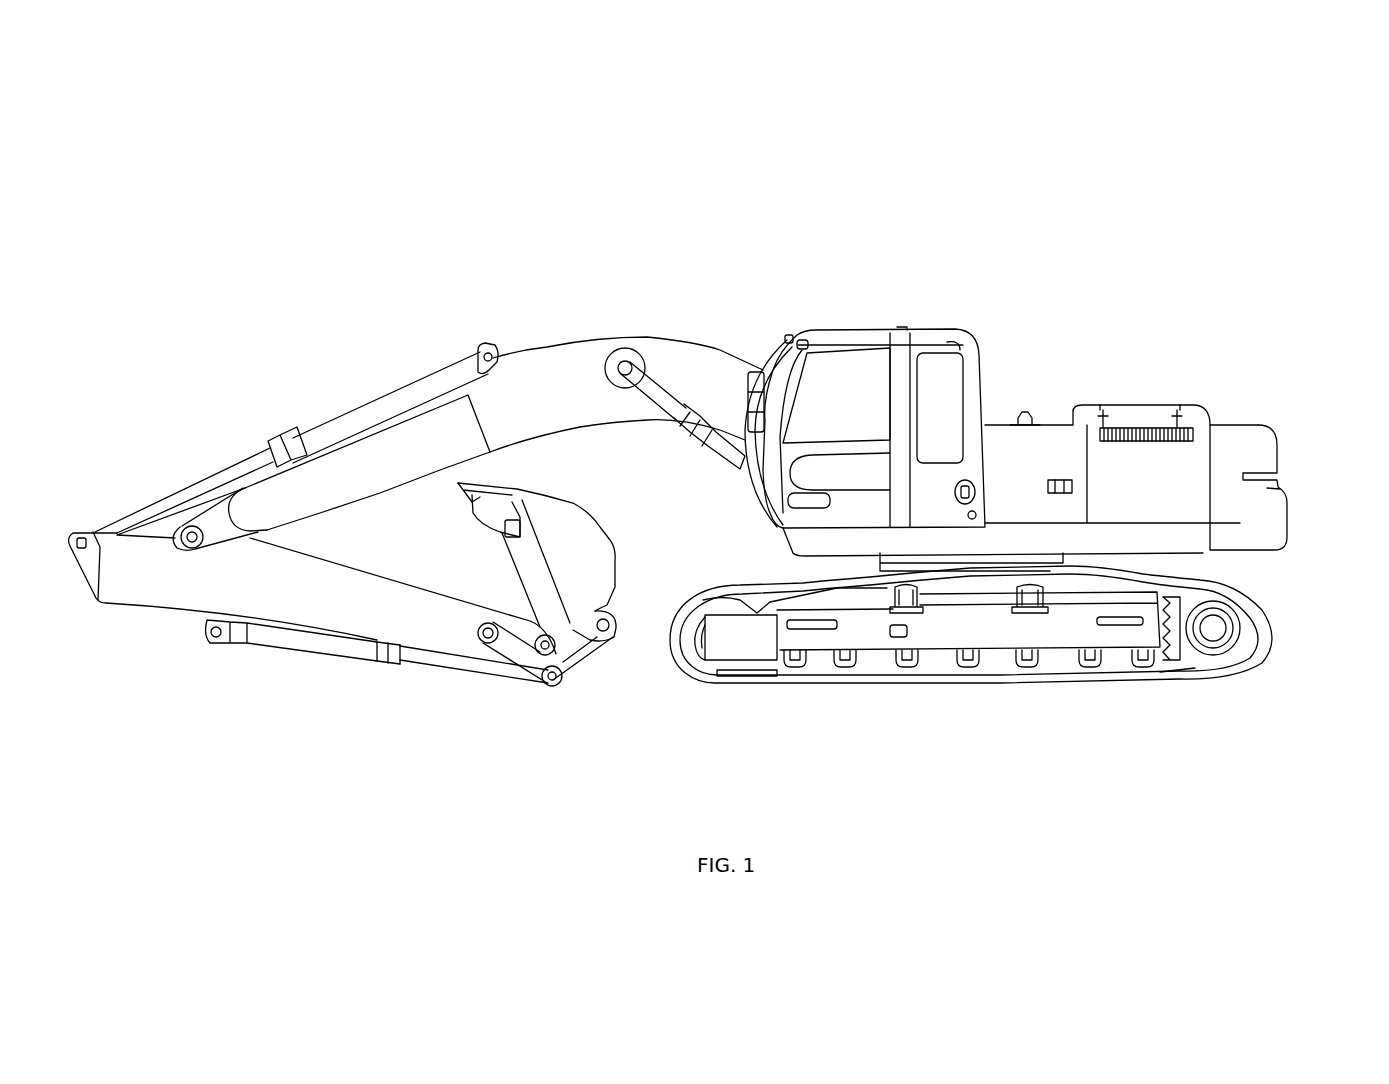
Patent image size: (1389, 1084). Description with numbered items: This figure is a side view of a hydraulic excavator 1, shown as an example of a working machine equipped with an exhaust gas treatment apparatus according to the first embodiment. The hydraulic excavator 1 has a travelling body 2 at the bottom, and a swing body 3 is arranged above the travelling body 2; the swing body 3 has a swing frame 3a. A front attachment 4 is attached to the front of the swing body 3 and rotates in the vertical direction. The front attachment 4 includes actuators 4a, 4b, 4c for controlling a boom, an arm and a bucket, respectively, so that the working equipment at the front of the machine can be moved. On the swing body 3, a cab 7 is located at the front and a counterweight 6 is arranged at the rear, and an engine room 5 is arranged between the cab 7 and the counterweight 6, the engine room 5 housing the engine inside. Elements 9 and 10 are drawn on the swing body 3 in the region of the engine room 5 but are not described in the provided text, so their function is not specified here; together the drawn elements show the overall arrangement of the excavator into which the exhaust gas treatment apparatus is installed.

The hydraulic excavator 1 is at (1050, 262).
The travelling body 2 is at (1000, 668).
The swing body 3 is at (987, 355).
The swing frame 3a is at (1093, 538).
The front attachment 4 is at (605, 308).
The actuator 4a is at (683, 402).
The actuator 4b is at (327, 433).
The actuator 4c is at (350, 647).
The engine room 5 is at (1152, 473).
The counterweight 6 is at (1245, 452).
The cab 7 is at (845, 378).
The engine hood 9 is at (1143, 413).
The air intake cover 10 is at (1123, 400).